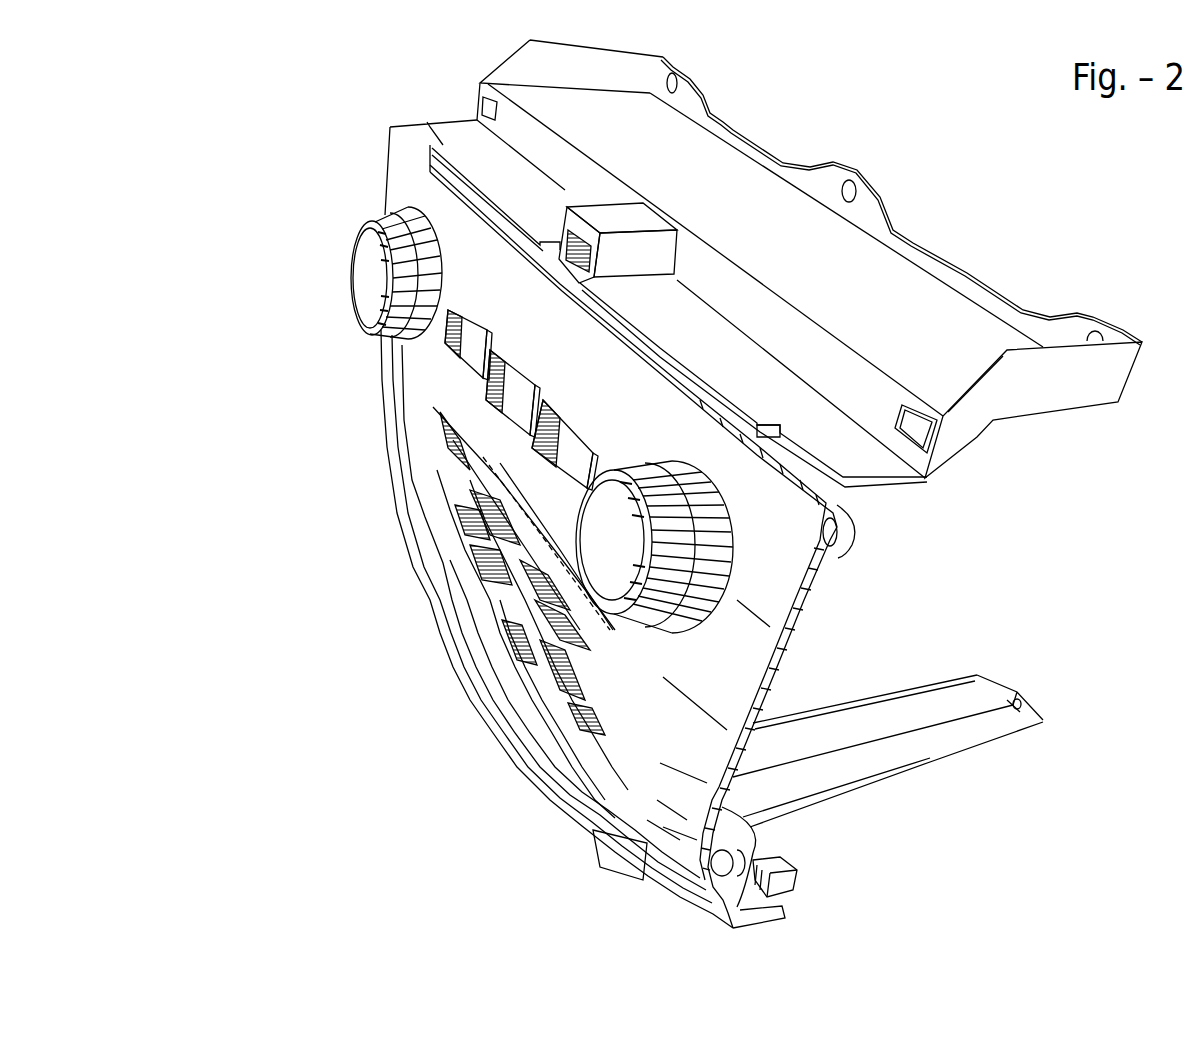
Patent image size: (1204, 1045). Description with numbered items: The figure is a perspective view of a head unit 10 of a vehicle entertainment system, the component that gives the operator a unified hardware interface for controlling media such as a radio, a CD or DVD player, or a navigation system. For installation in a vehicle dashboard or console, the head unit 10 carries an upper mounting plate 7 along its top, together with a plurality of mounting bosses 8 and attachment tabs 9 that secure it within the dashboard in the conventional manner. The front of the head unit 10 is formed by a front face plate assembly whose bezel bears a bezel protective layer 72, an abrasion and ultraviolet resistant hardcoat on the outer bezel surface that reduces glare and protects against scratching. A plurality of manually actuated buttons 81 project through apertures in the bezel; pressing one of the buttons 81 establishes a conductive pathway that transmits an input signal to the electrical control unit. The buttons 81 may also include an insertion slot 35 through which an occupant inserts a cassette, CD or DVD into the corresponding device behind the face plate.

The head unit 10 is at (275, 201).
The upper mounting plate 7 is at (913, 310).
The mounting bosses 8 is at (947, 733).
The attachment tabs 9 is at (780, 878).
The insertion slot 35 is at (565, 618).
The bezel protective layer 72 is at (690, 722).
The manually actuated buttons 81 is at (613, 543).